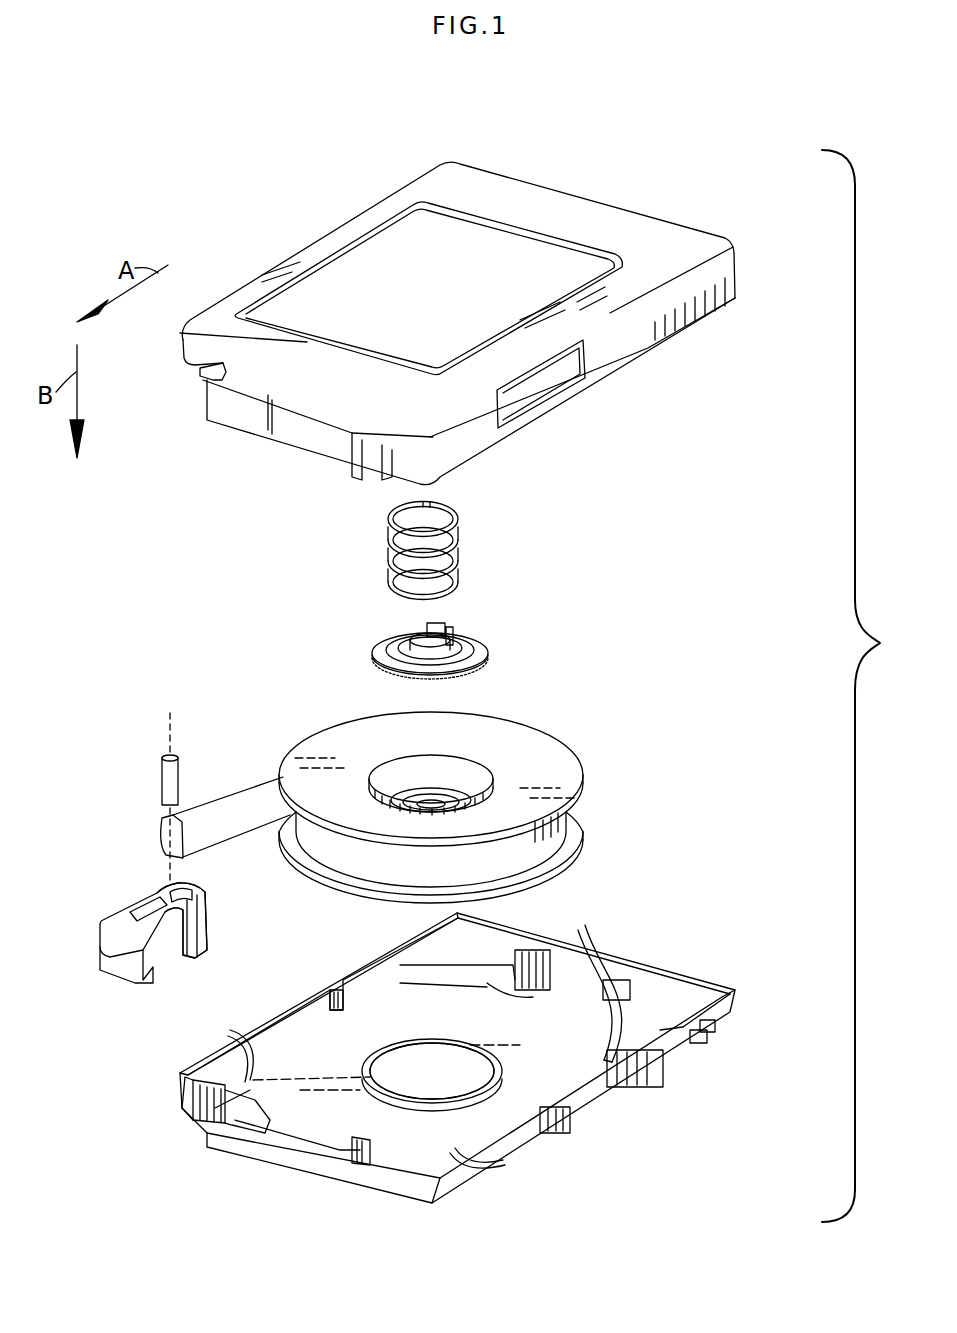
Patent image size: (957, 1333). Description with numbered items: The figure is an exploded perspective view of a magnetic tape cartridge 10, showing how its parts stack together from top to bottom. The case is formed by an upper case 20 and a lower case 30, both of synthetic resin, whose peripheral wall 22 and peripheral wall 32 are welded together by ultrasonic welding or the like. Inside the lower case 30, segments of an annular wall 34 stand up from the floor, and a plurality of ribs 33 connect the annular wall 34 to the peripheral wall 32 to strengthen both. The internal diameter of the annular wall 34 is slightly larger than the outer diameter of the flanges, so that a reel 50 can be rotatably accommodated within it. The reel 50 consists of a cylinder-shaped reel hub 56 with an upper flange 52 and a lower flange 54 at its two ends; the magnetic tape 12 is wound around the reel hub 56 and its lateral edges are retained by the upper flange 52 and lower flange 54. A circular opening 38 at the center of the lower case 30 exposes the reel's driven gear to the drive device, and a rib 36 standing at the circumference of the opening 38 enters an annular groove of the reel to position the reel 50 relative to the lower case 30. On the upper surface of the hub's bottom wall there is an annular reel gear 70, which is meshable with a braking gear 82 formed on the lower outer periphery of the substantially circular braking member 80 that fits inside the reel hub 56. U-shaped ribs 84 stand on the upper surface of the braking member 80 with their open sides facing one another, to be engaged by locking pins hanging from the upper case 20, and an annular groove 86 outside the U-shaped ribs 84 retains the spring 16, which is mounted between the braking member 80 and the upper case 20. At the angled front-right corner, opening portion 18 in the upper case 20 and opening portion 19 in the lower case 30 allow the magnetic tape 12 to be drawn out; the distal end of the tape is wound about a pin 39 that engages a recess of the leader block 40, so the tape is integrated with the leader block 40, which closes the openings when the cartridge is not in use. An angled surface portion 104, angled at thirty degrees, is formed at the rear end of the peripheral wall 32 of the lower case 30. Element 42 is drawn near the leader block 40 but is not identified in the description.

The magnetic tape cartridge 10 is at (704, 202).
The magnetic tape 12 is at (236, 813).
The spring 16 is at (448, 512).
The opening portion 18 is at (199, 376).
The opening portion 19 is at (185, 1115).
The upper case 20 is at (737, 281).
The peripheral wall 22 is at (608, 373).
The lower case 30 is at (476, 1058).
The peripheral wall 32 is at (580, 1113).
The ribs 33 is at (518, 980).
The annular wall 34 is at (588, 940).
The rib 36 is at (372, 1080).
The circular opening 38 is at (463, 1050).
The pin 39 is at (160, 773).
The leader block 40 is at (182, 946).
The clip 42 is at (180, 915).
The reel 50 is at (464, 790).
The upper flange 52 is at (566, 757).
The lower flange 54 is at (547, 873).
The reel hub 56 is at (437, 763).
The reel gear 70 is at (457, 778).
The braking member 80 is at (448, 648).
The braking gear 82 is at (402, 681).
The U-shaped ribs 84 is at (400, 635).
The annular groove 86 is at (470, 641).
The angled surface portion 104 is at (730, 1018).